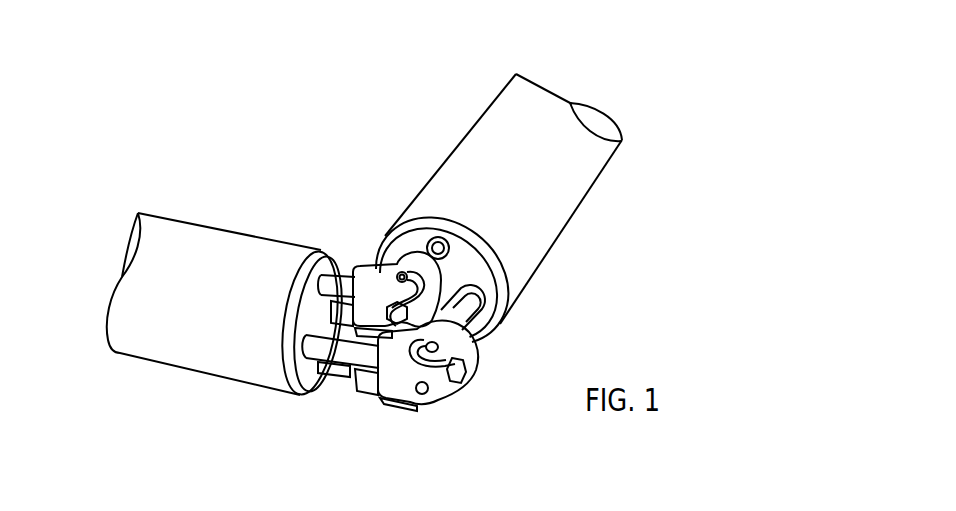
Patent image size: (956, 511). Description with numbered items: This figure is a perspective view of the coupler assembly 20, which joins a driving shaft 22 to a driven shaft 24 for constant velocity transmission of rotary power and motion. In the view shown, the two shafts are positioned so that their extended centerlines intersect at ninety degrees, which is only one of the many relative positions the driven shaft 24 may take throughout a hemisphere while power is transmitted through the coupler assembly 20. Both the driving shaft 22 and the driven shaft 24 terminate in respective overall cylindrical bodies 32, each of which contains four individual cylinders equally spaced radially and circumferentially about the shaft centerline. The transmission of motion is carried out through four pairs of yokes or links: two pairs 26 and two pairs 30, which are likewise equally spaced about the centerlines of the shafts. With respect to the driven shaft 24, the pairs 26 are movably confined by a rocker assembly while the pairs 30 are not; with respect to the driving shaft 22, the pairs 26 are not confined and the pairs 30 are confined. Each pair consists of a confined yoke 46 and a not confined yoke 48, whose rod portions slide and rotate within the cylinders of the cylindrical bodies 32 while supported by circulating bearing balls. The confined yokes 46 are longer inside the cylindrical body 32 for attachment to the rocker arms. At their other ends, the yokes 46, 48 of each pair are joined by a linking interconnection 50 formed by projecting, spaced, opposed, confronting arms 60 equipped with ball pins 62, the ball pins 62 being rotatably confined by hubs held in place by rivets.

The coupler assembly 20 is at (417, 320).
The driving shaft 22 is at (592, 188).
The driven shaft 24 is at (190, 370).
The pairs of yokes or links 26 is at (338, 273).
The pairs of yokes or links 30 is at (336, 372).
The cylindrical body 32 is at (222, 227).
The confined yokes 46 is at (352, 268).
The not confined yokes 48 is at (436, 244).
The linking interconnection 50 is at (470, 384).
The arms 60 is at (417, 408).
The ball pins 62 is at (425, 394).